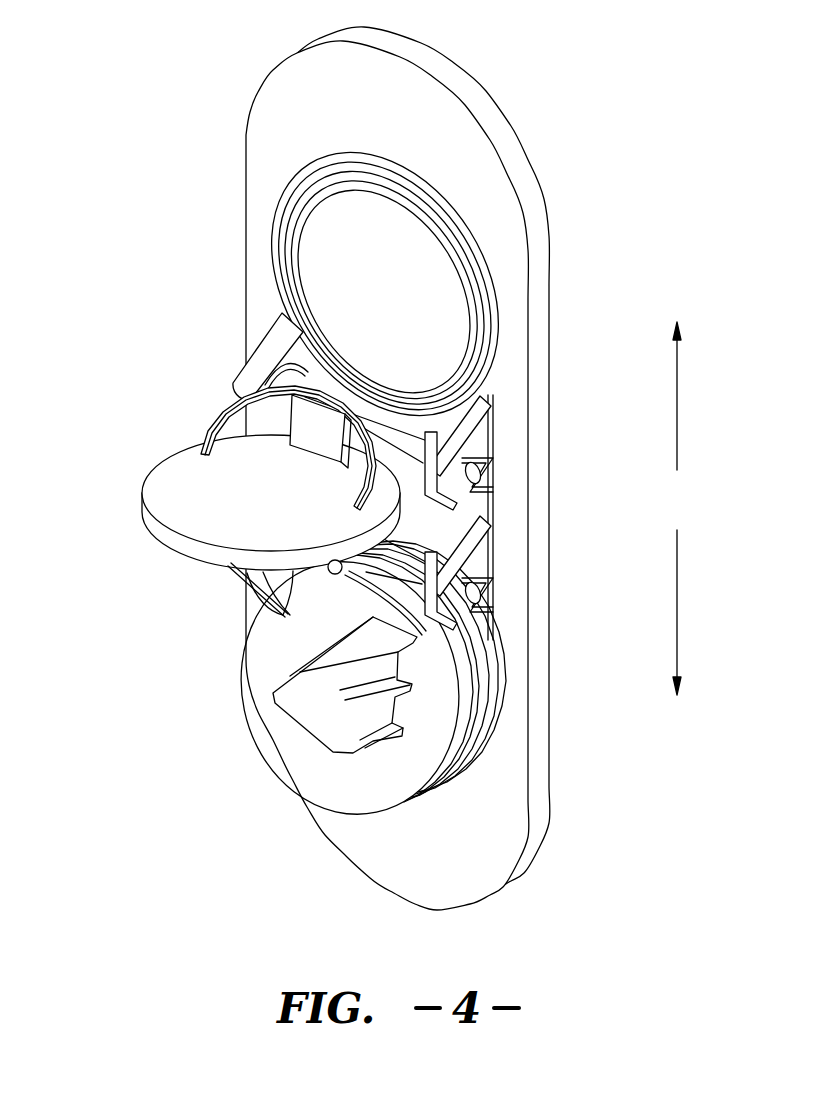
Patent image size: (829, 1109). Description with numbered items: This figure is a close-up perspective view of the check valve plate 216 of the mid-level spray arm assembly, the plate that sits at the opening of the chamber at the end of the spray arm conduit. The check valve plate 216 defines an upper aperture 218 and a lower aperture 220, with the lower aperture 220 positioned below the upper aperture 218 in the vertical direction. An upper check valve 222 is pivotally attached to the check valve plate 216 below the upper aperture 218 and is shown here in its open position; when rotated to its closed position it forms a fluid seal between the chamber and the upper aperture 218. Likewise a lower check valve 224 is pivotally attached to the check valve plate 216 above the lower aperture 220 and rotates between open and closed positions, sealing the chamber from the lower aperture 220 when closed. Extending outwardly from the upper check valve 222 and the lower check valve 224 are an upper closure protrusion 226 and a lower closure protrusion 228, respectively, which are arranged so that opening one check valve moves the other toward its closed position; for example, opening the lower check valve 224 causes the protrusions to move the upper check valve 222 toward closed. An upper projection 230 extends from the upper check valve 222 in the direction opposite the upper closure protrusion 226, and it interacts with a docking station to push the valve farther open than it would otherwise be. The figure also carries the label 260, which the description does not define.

The check valve plate 216 is at (162, 93).
The upper aperture 218 is at (410, 272).
The lower aperture 220 is at (472, 706).
The upper check valve 222 is at (172, 473).
The lower check valve 224 is at (330, 770).
The upper closure protrusion 226 is at (267, 577).
The lower closure protrusion 228 is at (312, 695).
The upper projection 230 is at (267, 428).
The housing 260 is at (308, 98).